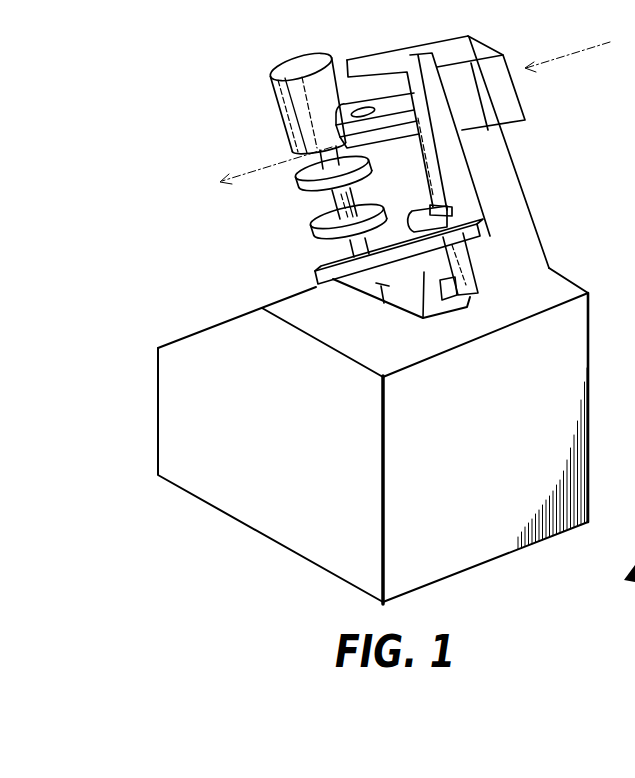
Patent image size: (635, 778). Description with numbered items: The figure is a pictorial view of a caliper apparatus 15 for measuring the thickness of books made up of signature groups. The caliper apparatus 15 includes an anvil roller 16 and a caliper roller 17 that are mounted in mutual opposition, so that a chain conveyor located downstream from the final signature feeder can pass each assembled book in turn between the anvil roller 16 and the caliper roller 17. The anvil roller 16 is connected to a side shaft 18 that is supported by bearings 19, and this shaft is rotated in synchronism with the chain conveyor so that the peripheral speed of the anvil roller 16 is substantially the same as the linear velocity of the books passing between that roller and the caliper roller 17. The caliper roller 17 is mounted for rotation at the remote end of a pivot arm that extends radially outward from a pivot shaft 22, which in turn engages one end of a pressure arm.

The caliper apparatus 15 is at (172, 281).
The anvil roller 16 is at (296, 117).
The caliper roller 17 is at (384, 104).
The side shaft 18 is at (357, 200).
The bearings 19 is at (306, 173).
The pivot shaft 22 is at (420, 158).